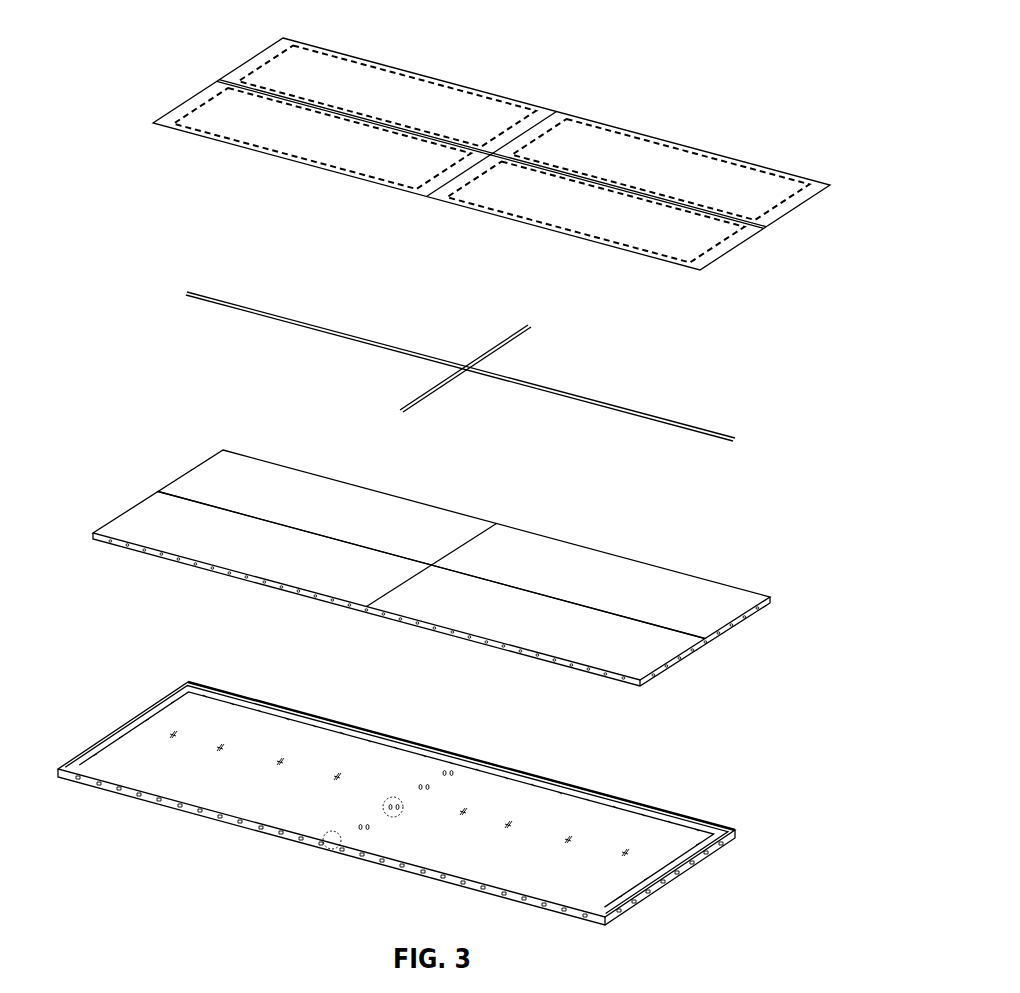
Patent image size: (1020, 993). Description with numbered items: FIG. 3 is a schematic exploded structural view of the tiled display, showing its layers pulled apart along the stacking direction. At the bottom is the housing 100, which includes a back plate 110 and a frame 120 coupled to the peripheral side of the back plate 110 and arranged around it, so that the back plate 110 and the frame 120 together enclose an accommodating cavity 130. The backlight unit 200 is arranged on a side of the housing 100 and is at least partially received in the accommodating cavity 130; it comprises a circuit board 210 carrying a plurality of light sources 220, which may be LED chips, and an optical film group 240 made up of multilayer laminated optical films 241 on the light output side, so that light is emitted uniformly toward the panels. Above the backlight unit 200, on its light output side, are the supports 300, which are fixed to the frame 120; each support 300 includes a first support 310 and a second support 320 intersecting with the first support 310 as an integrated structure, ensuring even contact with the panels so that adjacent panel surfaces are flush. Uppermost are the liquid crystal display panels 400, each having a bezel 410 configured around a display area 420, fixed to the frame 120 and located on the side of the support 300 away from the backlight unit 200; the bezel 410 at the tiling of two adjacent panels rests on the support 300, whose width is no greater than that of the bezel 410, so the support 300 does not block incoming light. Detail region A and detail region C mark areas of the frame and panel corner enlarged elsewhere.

The housing 100 is at (396, 803).
The back plate 110 is at (155, 777).
The frame 120 is at (102, 783).
The accommodating cavity 130 is at (238, 795).
The backlight unit 200 is at (406, 542).
The circuit board 210 is at (128, 552).
The light source 220 is at (190, 565).
The optical film group 240 is at (175, 488).
The optical film 241 is at (215, 462).
The support 300 is at (415, 366).
The first support 310 is at (377, 347).
The second support 320 is at (408, 405).
The liquid crystal display panel 400 is at (462, 140).
The bezel 410 is at (538, 112).
The display area 420 is at (380, 83).
The detail region A is at (325, 850).
The detail region C is at (395, 810).